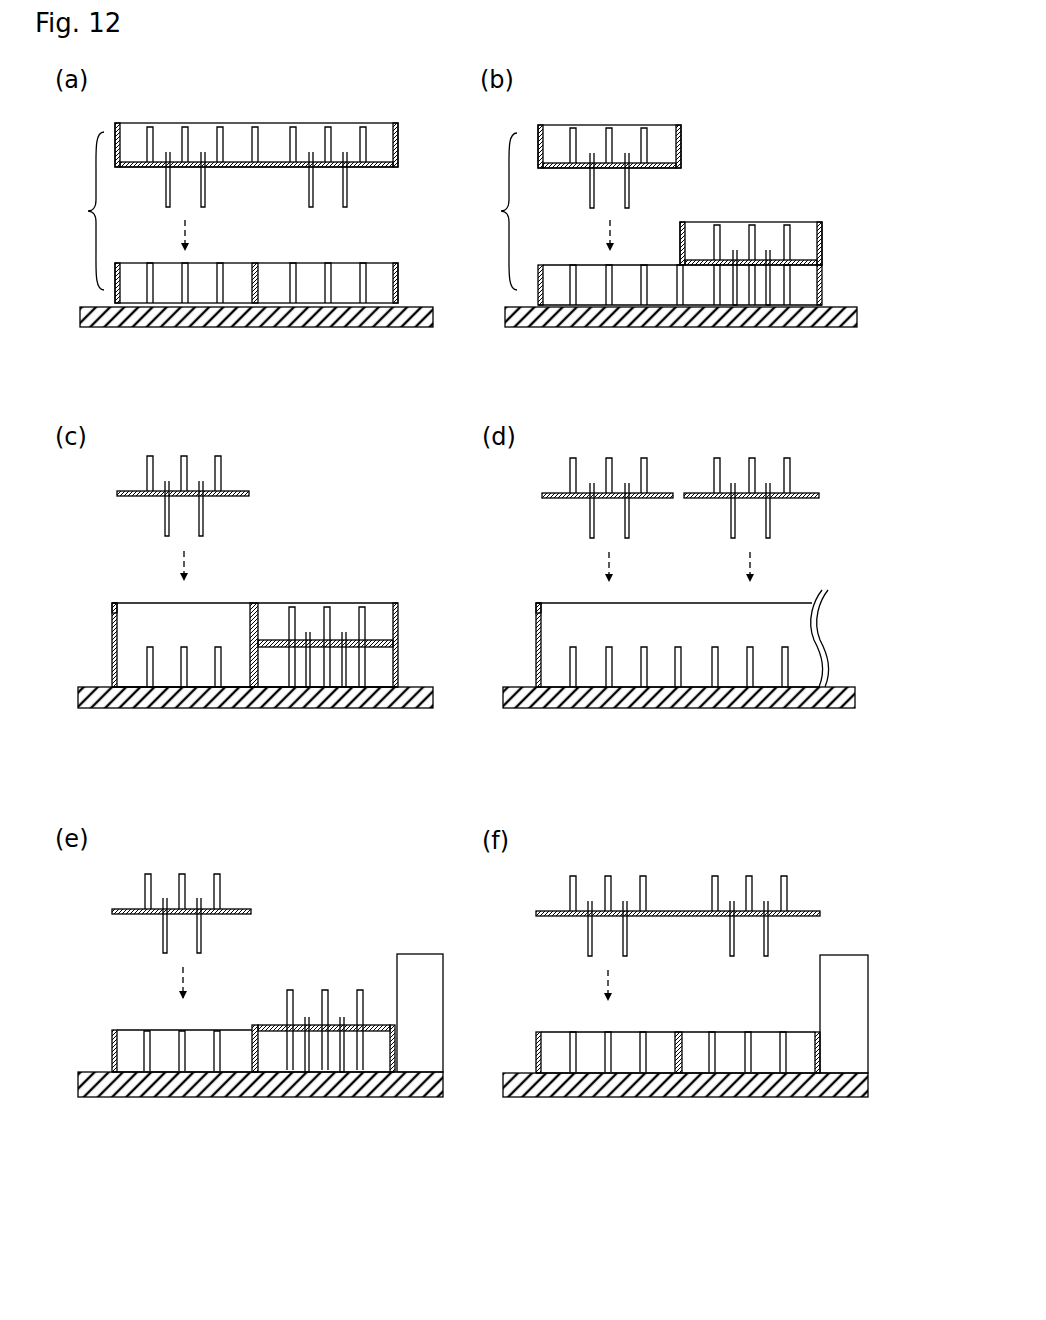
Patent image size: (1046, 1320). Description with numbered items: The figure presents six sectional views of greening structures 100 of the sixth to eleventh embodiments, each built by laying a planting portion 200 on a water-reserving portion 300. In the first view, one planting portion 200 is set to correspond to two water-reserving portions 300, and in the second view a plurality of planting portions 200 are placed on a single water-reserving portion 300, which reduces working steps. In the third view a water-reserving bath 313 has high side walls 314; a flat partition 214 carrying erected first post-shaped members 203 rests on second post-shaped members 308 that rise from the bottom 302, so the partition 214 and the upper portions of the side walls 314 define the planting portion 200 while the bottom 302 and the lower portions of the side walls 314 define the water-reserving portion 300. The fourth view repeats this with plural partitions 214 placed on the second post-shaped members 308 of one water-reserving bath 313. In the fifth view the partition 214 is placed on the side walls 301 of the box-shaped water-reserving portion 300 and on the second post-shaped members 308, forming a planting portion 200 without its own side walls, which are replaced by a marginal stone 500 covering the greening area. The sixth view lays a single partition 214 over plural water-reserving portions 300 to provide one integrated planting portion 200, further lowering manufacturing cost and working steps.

The greening structure 100 is at (399, 597).
The planting portion 200 is at (264, 118).
The water-reserving portion 300 is at (272, 256).
The first post-shaped members 203 is at (222, 464).
The partition 214 is at (254, 491).
The water-reserving bath 313 is at (110, 600).
The side walls 314 is at (111, 652).
The bottom 302 is at (150, 688).
The second post-shaped members 308 is at (184, 665).
The side walls 301 is at (110, 1052).
The marginal stone 500 is at (418, 965).